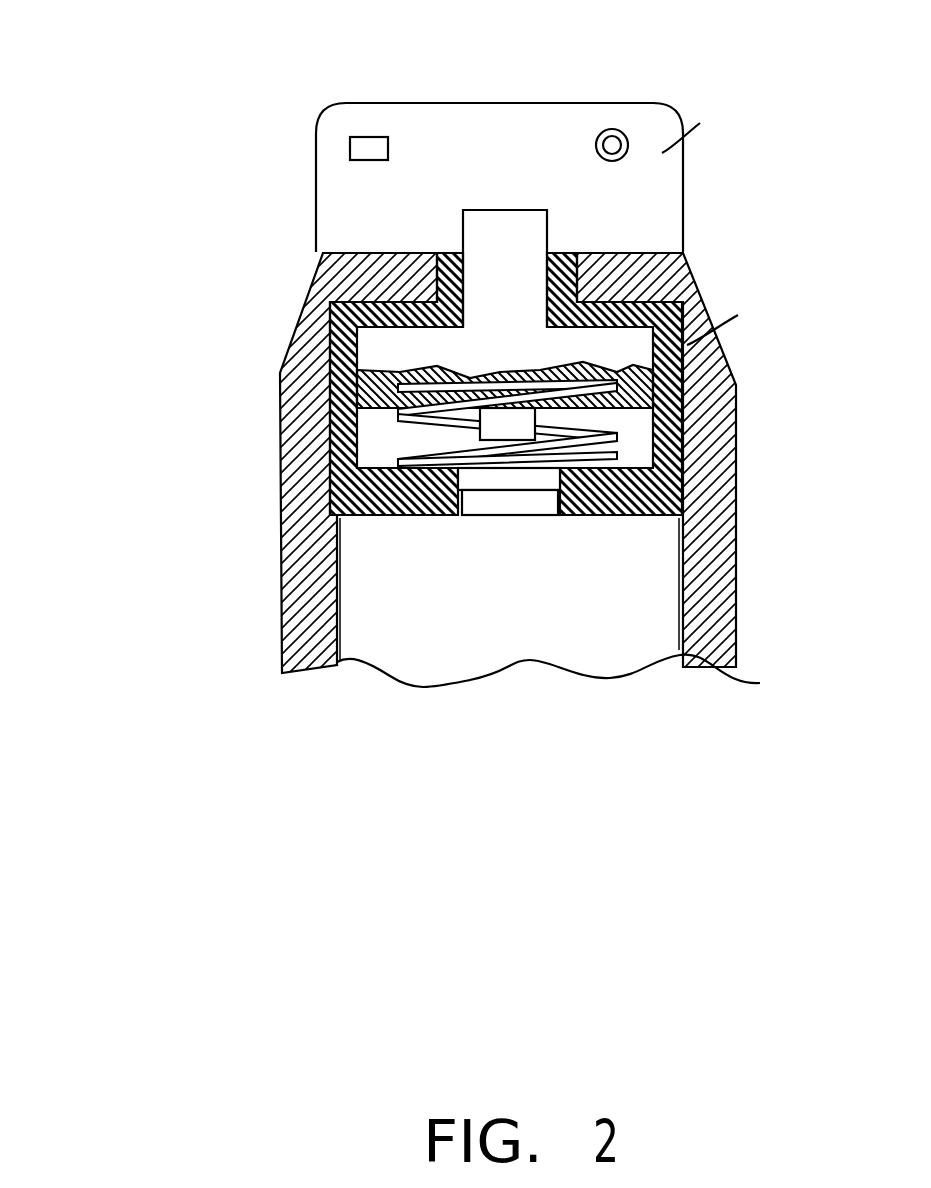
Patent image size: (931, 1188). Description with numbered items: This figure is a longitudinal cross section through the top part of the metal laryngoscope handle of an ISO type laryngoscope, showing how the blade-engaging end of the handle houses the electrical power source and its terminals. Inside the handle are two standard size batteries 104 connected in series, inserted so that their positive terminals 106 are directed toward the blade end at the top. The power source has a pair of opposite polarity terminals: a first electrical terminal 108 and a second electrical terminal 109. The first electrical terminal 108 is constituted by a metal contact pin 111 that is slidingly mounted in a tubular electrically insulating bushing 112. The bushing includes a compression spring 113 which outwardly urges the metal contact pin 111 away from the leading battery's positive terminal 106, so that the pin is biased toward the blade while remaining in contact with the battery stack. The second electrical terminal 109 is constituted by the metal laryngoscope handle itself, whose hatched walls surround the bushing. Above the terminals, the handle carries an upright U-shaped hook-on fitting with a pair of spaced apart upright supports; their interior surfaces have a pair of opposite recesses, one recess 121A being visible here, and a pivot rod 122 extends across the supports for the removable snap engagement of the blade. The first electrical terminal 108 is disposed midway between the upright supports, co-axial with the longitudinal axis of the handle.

The standard size batteries 104 is at (667, 620).
The positive terminals 106 is at (535, 502).
The first electrical terminal 108 is at (553, 232).
The second electrical terminal 109 is at (283, 597).
The metal contact pin 111 is at (460, 222).
The tubular electrically insulating bushing 112 is at (330, 495).
The compression spring 113 is at (330, 432).
The recess 121A is at (347, 150).
The pivot rod 122 is at (612, 128).